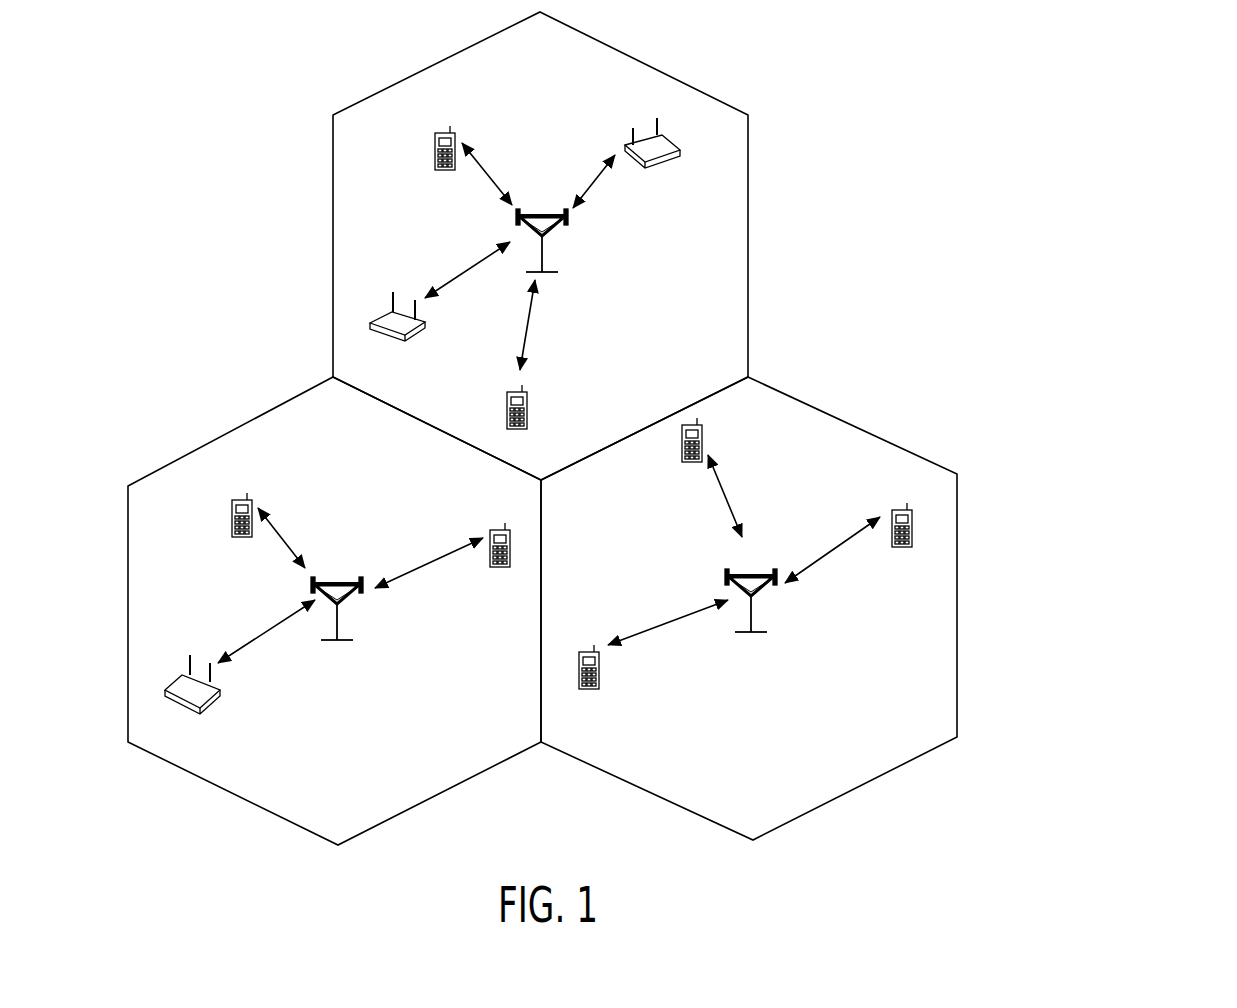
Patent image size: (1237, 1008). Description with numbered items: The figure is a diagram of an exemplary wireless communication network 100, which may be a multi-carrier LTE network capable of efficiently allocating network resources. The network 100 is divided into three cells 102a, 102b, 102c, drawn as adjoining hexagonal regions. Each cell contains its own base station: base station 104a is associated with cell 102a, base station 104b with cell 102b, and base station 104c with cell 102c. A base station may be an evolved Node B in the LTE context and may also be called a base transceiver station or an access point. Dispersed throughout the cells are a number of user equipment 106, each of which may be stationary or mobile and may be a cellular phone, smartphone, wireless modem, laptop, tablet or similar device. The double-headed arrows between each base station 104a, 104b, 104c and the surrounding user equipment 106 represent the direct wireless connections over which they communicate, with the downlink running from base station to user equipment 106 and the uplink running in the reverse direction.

The wireless communication network 100 is at (1207, 62).
The cell 102a is at (660, 60).
The cell 102b is at (220, 437).
The cell 102c is at (876, 430).
The base station 104a is at (544, 213).
The base station 104b is at (340, 582).
The base station 104c is at (759, 576).
The user equipment 106 is at (433, 158).